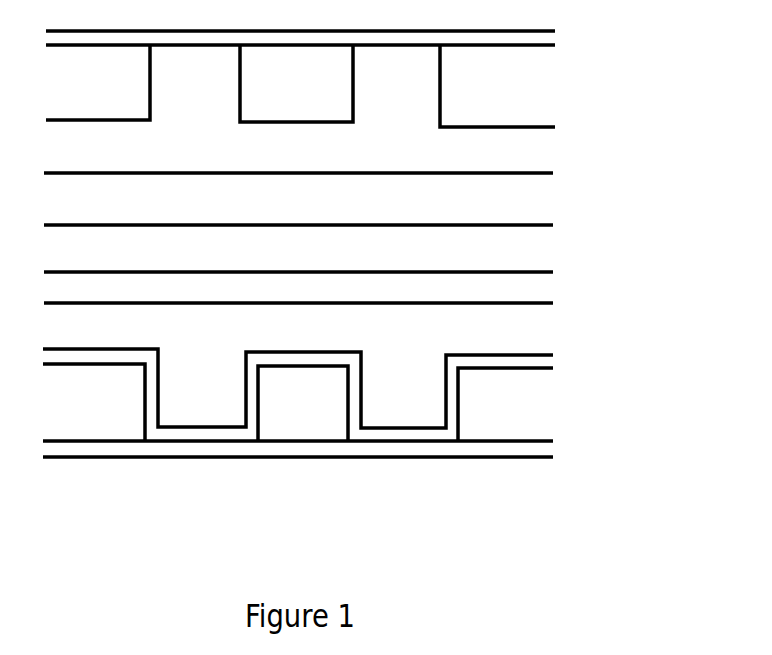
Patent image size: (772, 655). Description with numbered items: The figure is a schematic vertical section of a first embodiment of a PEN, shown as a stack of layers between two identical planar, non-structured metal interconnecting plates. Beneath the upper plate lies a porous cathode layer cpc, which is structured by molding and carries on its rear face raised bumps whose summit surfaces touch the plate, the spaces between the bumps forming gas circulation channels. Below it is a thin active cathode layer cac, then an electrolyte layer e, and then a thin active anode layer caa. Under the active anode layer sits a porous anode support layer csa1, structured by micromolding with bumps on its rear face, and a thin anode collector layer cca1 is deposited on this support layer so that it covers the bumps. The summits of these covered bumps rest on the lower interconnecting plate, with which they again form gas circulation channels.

The porous cathode layer cpc is at (565, 157).
The active cathode layer cac is at (563, 210).
The electrolyte layer e is at (563, 260).
The active anode layer caa is at (560, 293).
The porous anode support layer csa1 is at (558, 333).
The anode collector layer cca1 is at (558, 367).